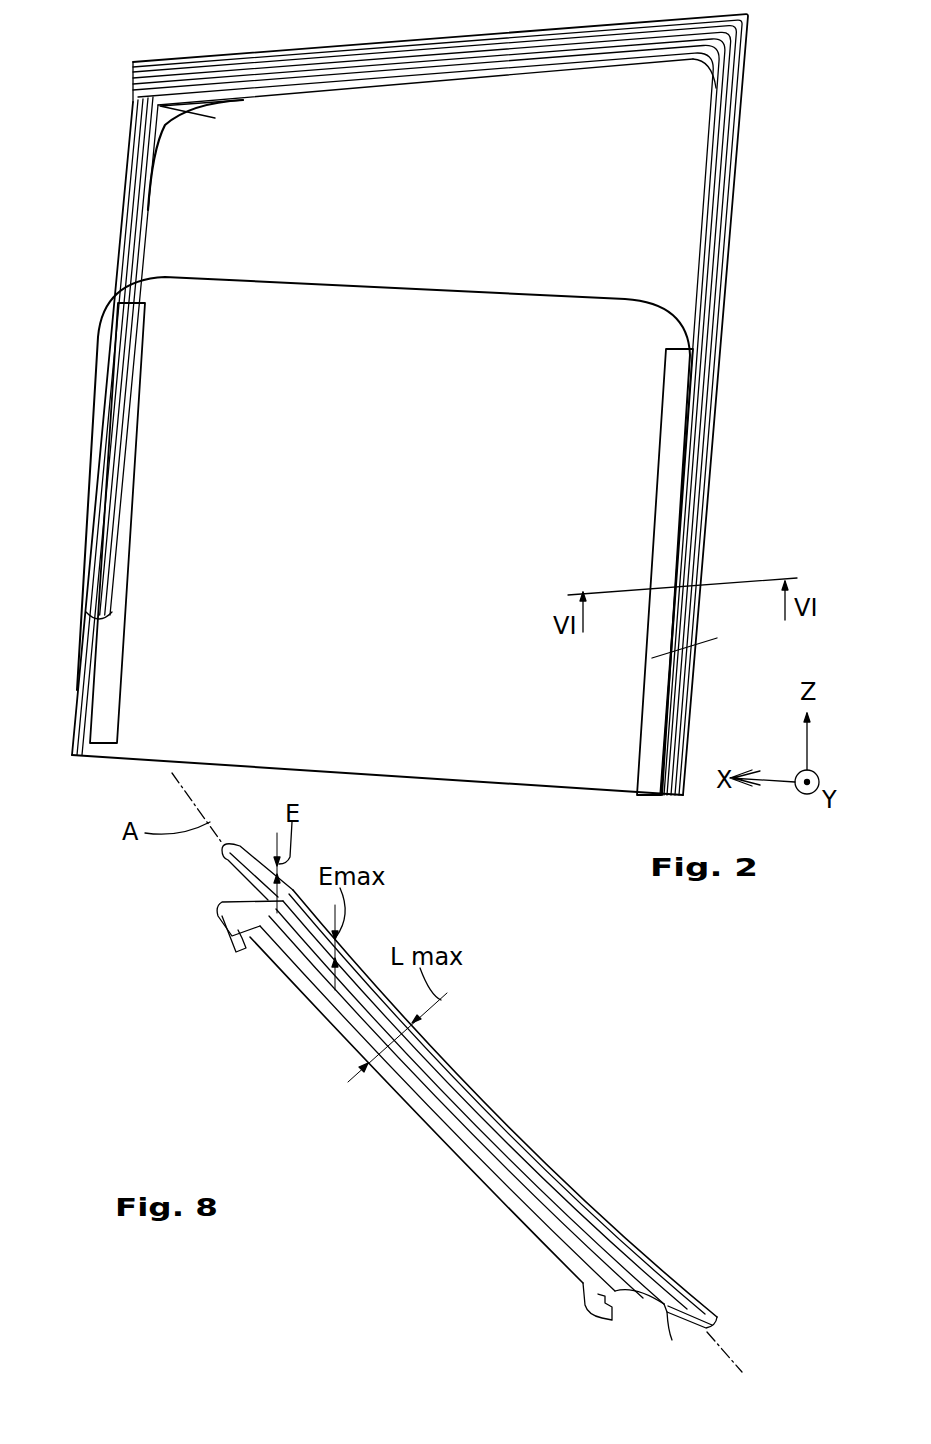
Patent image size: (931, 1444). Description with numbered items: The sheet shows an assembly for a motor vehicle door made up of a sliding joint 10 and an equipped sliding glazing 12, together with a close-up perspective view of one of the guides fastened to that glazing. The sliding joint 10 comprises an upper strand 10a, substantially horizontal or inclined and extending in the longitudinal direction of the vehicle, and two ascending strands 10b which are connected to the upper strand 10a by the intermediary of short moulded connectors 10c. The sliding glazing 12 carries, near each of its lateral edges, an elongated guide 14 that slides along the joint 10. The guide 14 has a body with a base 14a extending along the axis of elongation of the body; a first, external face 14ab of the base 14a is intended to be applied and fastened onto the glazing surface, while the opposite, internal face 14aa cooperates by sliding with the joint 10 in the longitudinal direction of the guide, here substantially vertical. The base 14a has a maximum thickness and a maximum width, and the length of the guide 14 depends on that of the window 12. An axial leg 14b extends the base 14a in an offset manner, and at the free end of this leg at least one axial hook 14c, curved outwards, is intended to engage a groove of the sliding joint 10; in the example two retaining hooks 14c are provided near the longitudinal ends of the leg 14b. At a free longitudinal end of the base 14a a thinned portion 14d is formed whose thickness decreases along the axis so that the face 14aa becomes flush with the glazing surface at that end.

In FIG. 2, the sliding joint 10 is at (435, 397).
In FIG. 2, the upper strand 10a is at (272, 43).
In FIG. 2, the ascending strands 10b is at (85, 507).
In FIG. 2, the short moulded connectors 10c is at (158, 107).
In FIG. 2, the equipped sliding glazing 12 is at (240, 563).
In FIG. 2, the guide 14 is at (110, 717).
In FIG. 8, the guide 14 is at (471, 1072).
In FIG. 8, the base 14a is at (478, 1090).
In FIG. 8, the internal face 14aa is at (500, 1142).
In FIG. 8, the external face 14ab is at (665, 1315).
In FIG. 8, the axial leg 14b is at (340, 1026).
In FIG. 8, the axial hook 14c is at (220, 927).
In FIG. 8, the thinned portion 14d is at (258, 868).